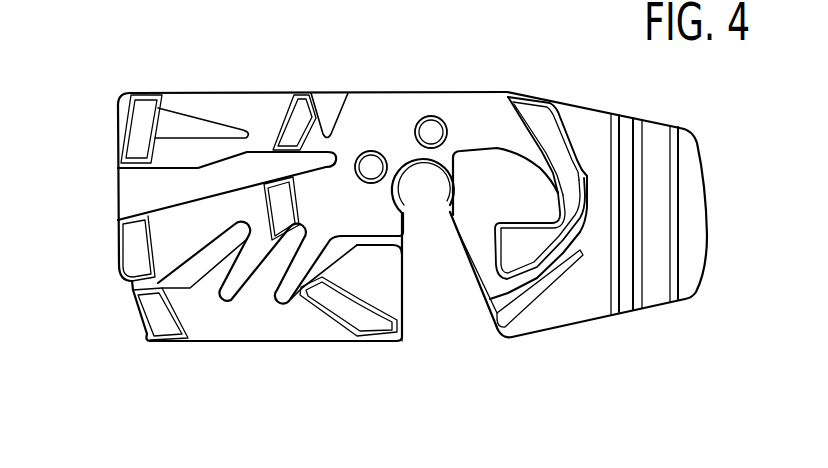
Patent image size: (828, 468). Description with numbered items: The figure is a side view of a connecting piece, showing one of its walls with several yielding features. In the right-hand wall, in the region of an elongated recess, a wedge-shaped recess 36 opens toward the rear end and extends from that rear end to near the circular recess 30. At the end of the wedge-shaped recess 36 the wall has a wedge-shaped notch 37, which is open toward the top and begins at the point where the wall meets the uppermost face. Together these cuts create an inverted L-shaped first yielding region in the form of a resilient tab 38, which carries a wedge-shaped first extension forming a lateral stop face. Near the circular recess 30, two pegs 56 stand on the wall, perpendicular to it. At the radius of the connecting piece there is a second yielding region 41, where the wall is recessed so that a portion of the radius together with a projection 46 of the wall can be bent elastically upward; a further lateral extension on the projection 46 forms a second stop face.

The circular recess 30 is at (433, 188).
The wedge-shaped recess 36 is at (133, 195).
The wedge-shaped notch 37 is at (328, 106).
The resilient tab 38 is at (207, 92).
The second yielding region 41 is at (420, 332).
The projection 46 is at (527, 256).
The pegs 56 is at (371, 163).